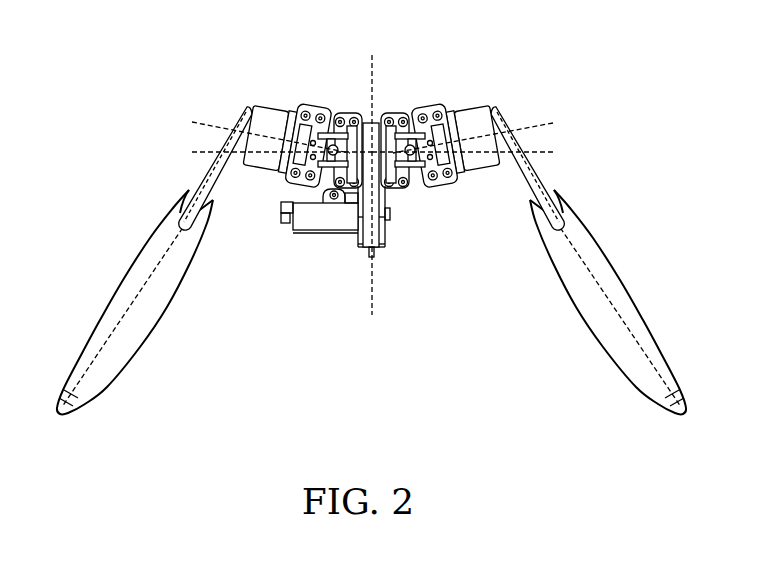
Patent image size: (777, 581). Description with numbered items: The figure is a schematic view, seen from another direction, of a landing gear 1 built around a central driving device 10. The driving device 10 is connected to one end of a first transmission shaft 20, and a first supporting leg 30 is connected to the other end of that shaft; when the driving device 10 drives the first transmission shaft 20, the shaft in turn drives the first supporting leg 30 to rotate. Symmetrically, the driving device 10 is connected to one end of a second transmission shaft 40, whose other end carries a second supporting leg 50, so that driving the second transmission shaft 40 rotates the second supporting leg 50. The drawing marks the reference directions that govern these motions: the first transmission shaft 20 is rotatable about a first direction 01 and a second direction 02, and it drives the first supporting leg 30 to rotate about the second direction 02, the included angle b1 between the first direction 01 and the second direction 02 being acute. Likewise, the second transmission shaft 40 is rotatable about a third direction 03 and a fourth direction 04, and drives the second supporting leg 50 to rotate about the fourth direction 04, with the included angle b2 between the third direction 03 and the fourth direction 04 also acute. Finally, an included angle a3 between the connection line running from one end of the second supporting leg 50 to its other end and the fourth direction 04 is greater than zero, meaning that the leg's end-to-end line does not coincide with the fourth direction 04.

The landing gear 1 is at (278, 35).
The driving device 10 is at (303, 227).
The first transmission shaft 20 is at (290, 177).
The first supporting leg 30 is at (125, 290).
The second transmission shaft 40 is at (452, 180).
The second supporting leg 50 is at (610, 282).
The included angle a3 is at (228, 142).
The included angle b1 is at (272, 142).
The included angle b2 is at (479, 148).
The first direction 01 is at (267, 156).
The second direction 02 is at (256, 132).
The third direction 03 is at (477, 153).
The fourth direction 04 is at (488, 132).